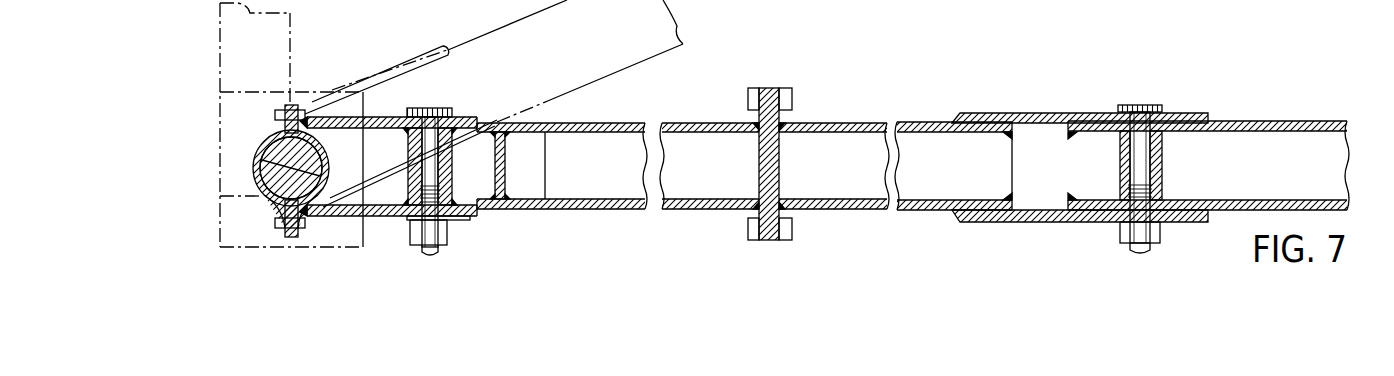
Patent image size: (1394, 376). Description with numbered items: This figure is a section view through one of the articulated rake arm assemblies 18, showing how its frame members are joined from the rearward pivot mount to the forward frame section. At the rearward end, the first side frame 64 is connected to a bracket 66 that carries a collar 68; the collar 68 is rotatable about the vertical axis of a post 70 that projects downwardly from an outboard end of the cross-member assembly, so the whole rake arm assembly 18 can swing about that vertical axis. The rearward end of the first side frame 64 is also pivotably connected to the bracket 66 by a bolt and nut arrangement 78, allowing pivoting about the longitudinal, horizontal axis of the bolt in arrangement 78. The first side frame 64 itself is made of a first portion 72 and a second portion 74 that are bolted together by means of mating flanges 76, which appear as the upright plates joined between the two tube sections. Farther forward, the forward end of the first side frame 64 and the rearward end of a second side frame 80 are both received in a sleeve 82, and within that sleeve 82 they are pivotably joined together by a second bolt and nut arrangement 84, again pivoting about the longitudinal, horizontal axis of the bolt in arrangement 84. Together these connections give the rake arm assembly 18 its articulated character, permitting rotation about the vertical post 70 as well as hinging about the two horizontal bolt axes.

The rake arm assembly 18 is at (899, 110).
The first side frame 64 is at (680, 117).
The bracket 66 is at (372, 217).
The collar 68 is at (328, 163).
The post 70 is at (258, 150).
The first portion 72 is at (615, 210).
The second portion 74 is at (849, 210).
The mating flanges 76 is at (762, 88).
The bolt and nut arrangement 78 is at (452, 243).
The second side frame 80 is at (1243, 120).
The sleeve 82 is at (1078, 113).
The bolt and nut arrangement 84 is at (1151, 247).